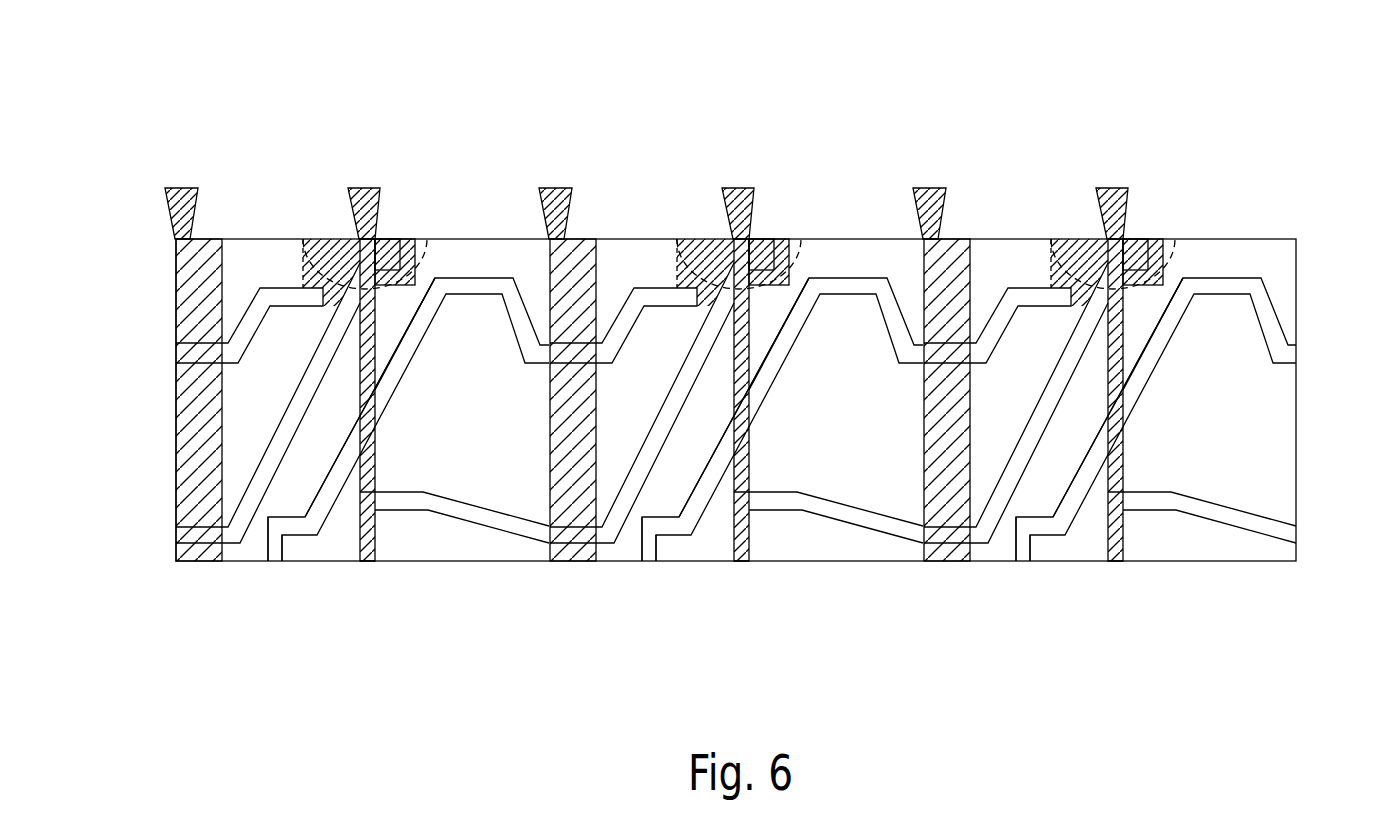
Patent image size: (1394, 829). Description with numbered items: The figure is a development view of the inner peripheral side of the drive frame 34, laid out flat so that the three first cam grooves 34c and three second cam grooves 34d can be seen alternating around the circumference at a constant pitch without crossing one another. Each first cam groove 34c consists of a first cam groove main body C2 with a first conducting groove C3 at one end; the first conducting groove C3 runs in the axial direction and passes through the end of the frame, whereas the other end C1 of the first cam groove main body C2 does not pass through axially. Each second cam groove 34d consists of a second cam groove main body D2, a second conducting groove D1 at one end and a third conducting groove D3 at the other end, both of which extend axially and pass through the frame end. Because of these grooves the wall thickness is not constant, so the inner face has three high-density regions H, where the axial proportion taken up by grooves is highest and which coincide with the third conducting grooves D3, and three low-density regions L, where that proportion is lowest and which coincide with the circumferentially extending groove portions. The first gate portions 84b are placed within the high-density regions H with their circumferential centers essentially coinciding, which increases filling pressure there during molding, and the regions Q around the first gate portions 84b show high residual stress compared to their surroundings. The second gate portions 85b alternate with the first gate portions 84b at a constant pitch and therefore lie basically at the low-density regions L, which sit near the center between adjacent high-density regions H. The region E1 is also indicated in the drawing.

The drive frame 34 is at (1313, 244).
The first cam groove 34c is at (238, 330).
The second cam groove 34d is at (285, 428).
The first gate portion 84b is at (364, 187).
The second gate portion 85b is at (182, 187).
The low-density region L is at (197, 561).
The high-density region H is at (398, 561).
The region around the first gate portion Q is at (428, 228).
The end portion E1 is at (335, 280).
The other end of the first cam groove main body C1 is at (300, 280).
The first cam groove main body C2 is at (418, 362).
The first conducting groove C3 is at (277, 570).
The second conducting groove D1 is at (405, 233).
The second cam groove main body D2 is at (299, 440).
The third conducting groove D3 is at (365, 570).